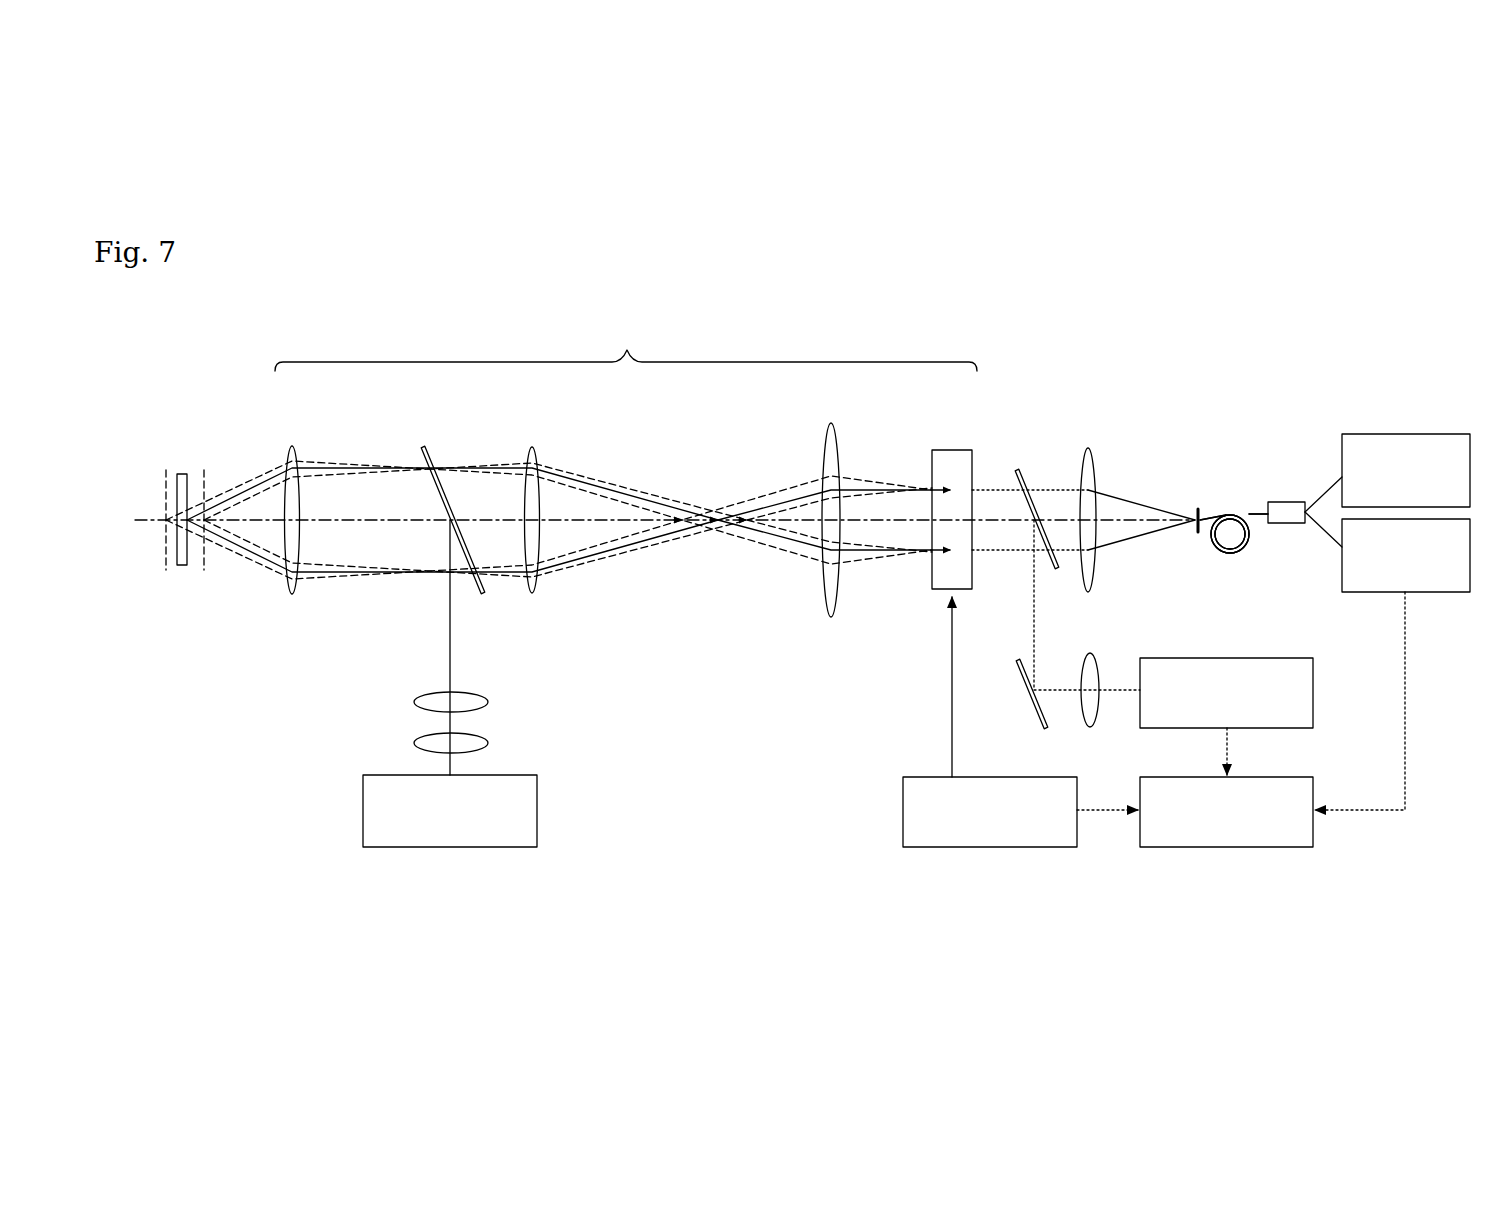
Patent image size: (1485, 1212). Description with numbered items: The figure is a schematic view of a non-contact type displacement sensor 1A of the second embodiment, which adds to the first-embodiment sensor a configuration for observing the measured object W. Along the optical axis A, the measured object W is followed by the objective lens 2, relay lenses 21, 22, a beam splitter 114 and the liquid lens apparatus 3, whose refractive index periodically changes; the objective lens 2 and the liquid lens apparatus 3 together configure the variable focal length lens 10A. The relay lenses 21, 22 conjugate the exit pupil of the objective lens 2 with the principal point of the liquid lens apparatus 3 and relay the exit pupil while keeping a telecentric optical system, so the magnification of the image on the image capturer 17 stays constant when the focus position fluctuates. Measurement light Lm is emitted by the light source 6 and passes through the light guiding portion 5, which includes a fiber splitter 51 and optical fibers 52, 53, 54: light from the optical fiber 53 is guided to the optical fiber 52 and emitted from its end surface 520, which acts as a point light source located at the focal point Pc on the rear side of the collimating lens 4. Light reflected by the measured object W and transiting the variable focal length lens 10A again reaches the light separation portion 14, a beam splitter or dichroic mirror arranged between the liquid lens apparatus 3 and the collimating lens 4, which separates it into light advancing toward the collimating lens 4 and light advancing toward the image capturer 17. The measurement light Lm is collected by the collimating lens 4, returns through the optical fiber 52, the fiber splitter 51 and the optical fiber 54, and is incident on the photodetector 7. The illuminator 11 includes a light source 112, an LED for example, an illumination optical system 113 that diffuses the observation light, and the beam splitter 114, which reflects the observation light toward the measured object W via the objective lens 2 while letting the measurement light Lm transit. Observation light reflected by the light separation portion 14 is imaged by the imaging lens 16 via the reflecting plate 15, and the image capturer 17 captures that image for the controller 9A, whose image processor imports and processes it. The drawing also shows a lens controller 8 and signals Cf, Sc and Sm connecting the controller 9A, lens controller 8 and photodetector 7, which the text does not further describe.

The non-contact type displacement sensor 1A is at (1202, 290).
The variable focal length lens 10A is at (626, 342).
The objective lens 2 is at (298, 458).
The relay lens 21 is at (540, 458).
The relay lens 22 is at (838, 462).
The liquid lens apparatus 3 is at (972, 470).
The collimating lens 4 is at (1097, 478).
The light guiding portion 5 is at (1265, 388).
The fiber splitter 51 is at (1284, 500).
The optical fiber 52 is at (1248, 507).
The optical fiber 53 is at (1320, 487).
The optical fiber 54 is at (1322, 541).
The end surface 520 is at (1210, 513).
The light source 6 is at (1441, 434).
The photodetector 7 is at (1442, 592).
The lens controller 8 is at (922, 777).
The controller 9A is at (1298, 777).
The illuminator 11 is at (588, 707).
The light source 112 is at (497, 847).
The illumination optical system 113 is at (497, 685).
The beam splitter 114 is at (470, 596).
The light separation portion 14 is at (1030, 467).
The reflecting plate 15 is at (1036, 717).
The imaging lens 16 is at (1082, 718).
The image capturer 17 is at (1300, 658).
The measured object W is at (182, 473).
The measurement light Lm is at (243, 490).
The optical axis A is at (616, 518).
The focal point Pc is at (1196, 510).
The focus control signal Cf is at (970, 687).
The control signal Sc is at (1107, 792).
The measurement signal Sm is at (1381, 701).